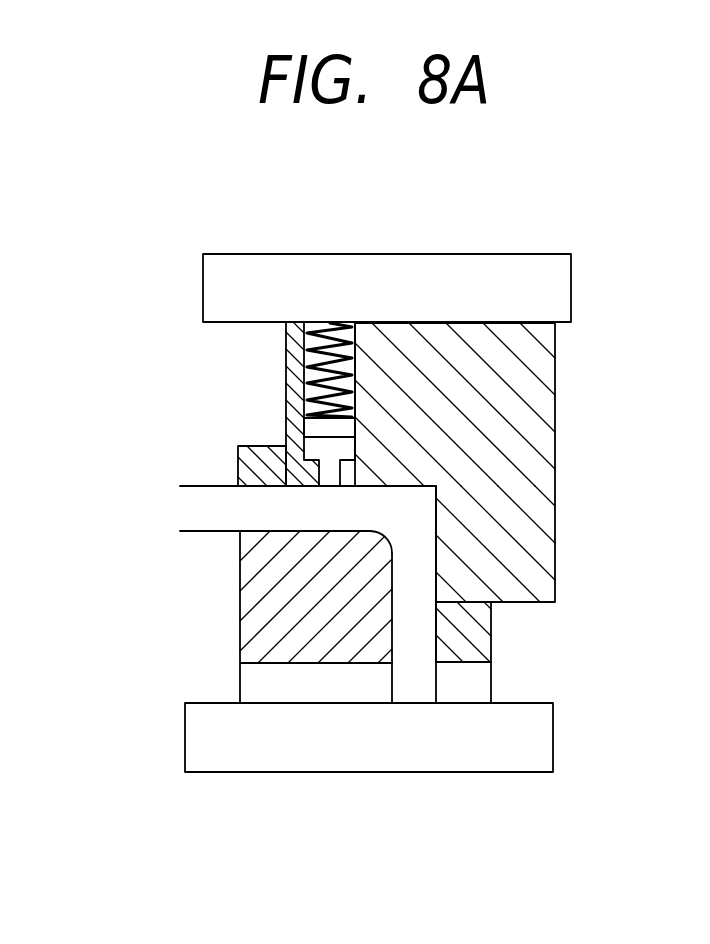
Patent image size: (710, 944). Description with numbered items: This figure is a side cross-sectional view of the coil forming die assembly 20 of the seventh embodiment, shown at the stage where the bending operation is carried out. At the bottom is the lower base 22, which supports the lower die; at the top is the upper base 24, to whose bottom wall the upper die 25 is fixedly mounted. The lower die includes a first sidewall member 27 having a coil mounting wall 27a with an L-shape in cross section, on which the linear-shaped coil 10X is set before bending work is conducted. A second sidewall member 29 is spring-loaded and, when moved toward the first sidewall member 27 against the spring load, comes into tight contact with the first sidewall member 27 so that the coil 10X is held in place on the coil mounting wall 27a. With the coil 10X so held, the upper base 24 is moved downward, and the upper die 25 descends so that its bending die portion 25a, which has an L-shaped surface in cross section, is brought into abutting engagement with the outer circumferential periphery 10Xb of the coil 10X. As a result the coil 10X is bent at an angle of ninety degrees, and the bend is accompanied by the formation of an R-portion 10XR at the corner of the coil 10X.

The coil forming die assembly 20 is at (592, 242).
The lower base 22 is at (230, 750).
The upper base 24 is at (517, 277).
The upper die 25 is at (535, 348).
The bending die portion 25a is at (497, 573).
The first sidewall member 27 is at (277, 622).
The coil mounting wall 27a is at (345, 517).
The second sidewall member 29 is at (243, 447).
The coil 10X is at (417, 560).
The R-portion 10XR is at (397, 520).
The outer circumferential periphery 10Xb is at (440, 585).